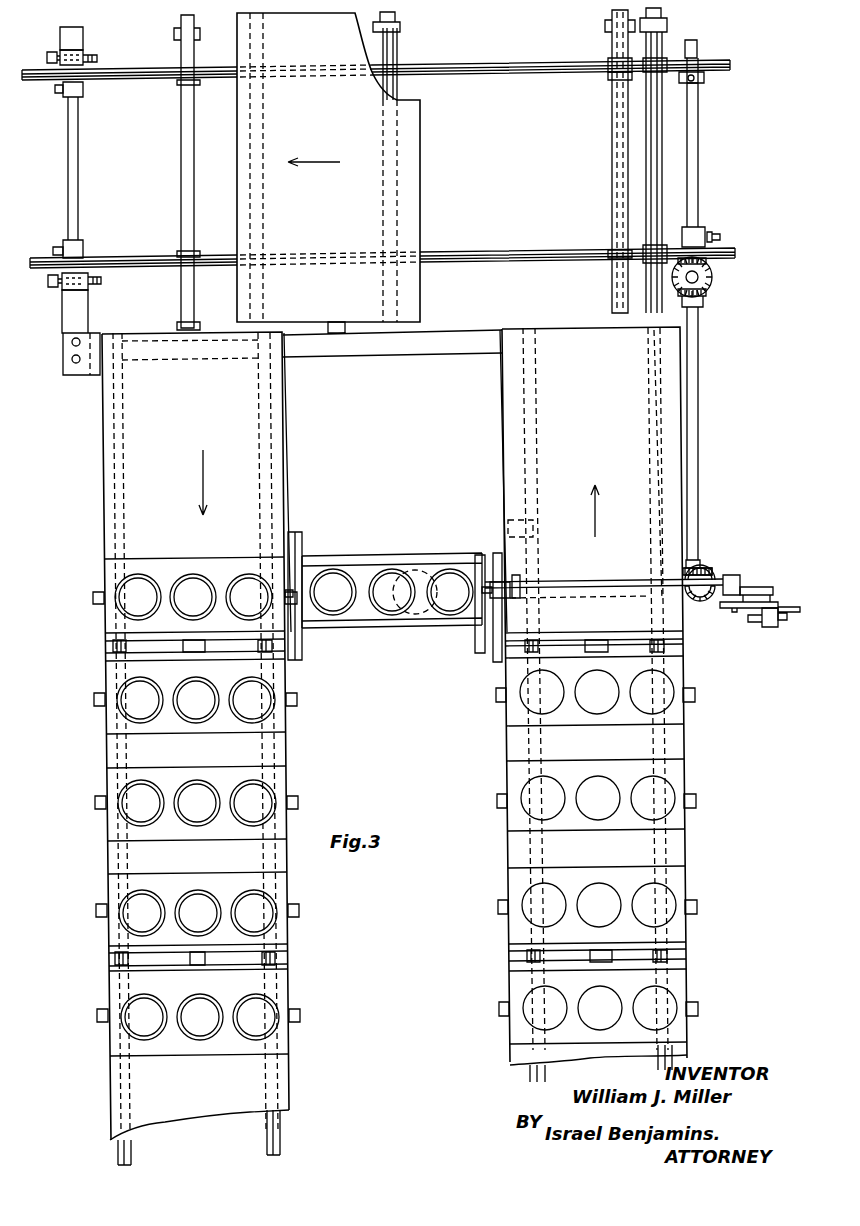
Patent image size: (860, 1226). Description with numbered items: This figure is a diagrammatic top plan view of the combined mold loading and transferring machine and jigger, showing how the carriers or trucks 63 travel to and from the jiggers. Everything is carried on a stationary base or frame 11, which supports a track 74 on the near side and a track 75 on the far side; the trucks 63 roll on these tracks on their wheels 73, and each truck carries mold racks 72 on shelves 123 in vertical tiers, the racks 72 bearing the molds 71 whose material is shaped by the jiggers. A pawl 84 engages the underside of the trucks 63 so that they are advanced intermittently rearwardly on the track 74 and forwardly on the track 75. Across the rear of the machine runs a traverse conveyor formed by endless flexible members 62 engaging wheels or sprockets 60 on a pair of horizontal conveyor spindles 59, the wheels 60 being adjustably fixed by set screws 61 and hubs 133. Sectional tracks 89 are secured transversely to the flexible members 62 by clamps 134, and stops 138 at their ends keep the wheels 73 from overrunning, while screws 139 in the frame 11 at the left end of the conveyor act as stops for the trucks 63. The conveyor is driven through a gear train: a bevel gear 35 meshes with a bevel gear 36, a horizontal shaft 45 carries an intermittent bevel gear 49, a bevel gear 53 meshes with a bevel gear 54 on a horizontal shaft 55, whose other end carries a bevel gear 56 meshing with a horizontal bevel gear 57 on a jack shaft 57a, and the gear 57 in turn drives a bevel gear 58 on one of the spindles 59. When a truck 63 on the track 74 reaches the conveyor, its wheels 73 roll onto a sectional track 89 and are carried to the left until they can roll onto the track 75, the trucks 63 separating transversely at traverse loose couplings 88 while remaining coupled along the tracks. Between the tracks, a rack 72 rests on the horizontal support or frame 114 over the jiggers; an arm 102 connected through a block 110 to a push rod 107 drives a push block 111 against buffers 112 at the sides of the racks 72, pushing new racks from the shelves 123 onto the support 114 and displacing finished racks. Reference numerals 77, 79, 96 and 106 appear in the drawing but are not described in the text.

The stationary base or frame 11 is at (60, 33).
The bevel gear 35 is at (440, 565).
The bevel gear 36 is at (415, 628).
The horizontal shaft 45 is at (580, 607).
The intermittent bevel gear 49 is at (665, 560).
The bevel gear 53 is at (718, 574).
The bevel gear 54 is at (708, 566).
The horizontal shaft 55 is at (698, 440).
The bevel gear 56 is at (705, 300).
The horizontal bevel gear 57 is at (713, 280).
The jack shaft 57a is at (712, 287).
The bevel gear 58 is at (712, 260).
The horizontal conveyor spindles 59 is at (78, 204).
The wheels or sprockets 60 is at (110, 80).
The set screws 61 is at (55, 90).
The endless flexible members 62 is at (522, 73).
The carriers or trucks 63 is at (508, 966).
The molds 71 is at (250, 897).
The mold racks 72 is at (290, 642).
The wheels 73 is at (398, 52).
The track 74 is at (640, 1068).
The track 75 is at (131, 1152).
The post 77 is at (486, 618).
The post 79 is at (385, 602).
The pawl 84 is at (508, 528).
The traverse loose couplings 88 is at (600, 640).
The sectional tracks 89 is at (181, 181).
The bracket 96 is at (760, 587).
The arm 102 is at (712, 603).
The handle 106 is at (766, 628).
The push rod 107 is at (610, 581).
The block 110 is at (742, 582).
The push block 111 is at (510, 592).
The buffer 112 is at (514, 578).
The horizontal support or frame 114 is at (380, 560).
The shelves 123 is at (285, 469).
The hubs 133 is at (63, 92).
The clamps 134 is at (618, 60).
The stops 138 is at (400, 27).
The screws 139 is at (90, 60).